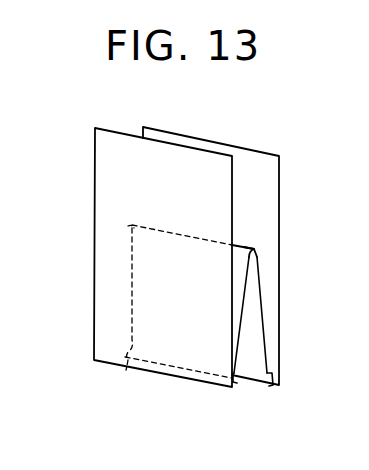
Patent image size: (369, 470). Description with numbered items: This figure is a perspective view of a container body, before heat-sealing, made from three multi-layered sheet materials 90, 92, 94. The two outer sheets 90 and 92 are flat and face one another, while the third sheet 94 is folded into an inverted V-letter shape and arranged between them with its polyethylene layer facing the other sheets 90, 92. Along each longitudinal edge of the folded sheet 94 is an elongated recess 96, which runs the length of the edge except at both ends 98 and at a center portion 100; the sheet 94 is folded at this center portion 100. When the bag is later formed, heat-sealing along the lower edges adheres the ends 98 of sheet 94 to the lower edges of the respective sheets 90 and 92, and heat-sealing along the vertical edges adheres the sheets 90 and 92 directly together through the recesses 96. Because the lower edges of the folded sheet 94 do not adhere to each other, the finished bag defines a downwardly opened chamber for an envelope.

The sheet material 90 is at (95, 190).
The sheet material 92 is at (274, 170).
The sheet material 94 is at (246, 250).
The elongated recess 96 is at (130, 297).
The ends 98 is at (128, 365).
The center portion 100 is at (128, 232).